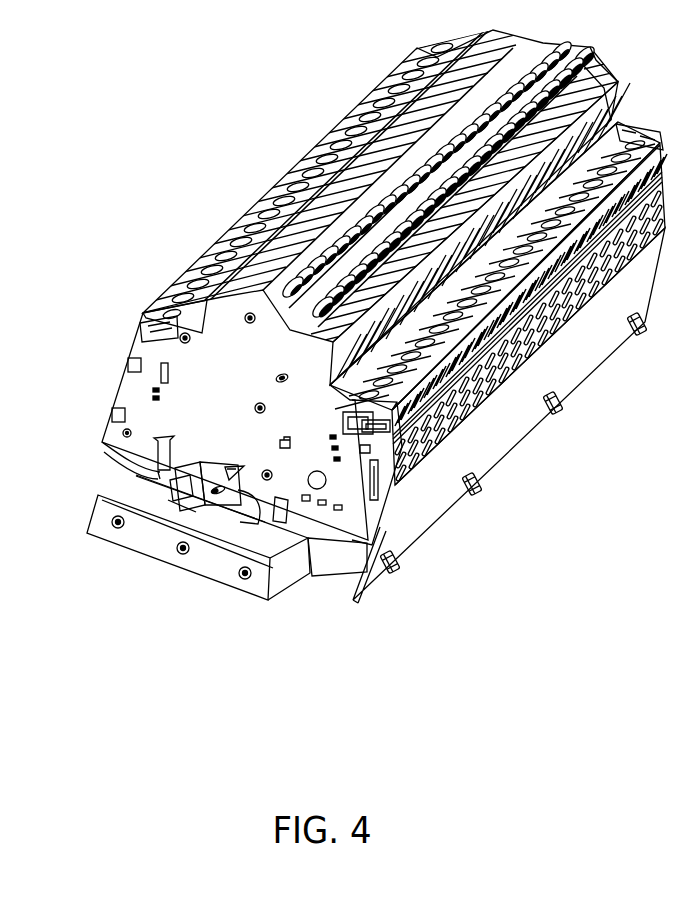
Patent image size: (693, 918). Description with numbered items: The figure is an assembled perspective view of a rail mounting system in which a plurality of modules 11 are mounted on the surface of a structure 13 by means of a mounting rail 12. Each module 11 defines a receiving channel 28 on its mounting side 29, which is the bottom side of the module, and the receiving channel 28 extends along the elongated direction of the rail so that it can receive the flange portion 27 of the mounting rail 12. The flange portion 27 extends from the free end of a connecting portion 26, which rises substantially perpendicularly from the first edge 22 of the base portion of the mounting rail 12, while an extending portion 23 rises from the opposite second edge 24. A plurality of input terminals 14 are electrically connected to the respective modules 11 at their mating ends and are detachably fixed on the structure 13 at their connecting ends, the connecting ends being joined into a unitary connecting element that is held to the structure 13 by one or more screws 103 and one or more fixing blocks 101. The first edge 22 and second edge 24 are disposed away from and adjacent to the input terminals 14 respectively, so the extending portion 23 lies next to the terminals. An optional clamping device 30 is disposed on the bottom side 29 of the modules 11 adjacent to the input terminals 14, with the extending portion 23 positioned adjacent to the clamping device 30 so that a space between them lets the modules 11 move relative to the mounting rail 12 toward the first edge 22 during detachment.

The module 11 is at (138, 400).
The mounting rail 12 is at (214, 506).
The structure 13 is at (130, 540).
The input terminal 14 is at (507, 423).
The first edge 22 is at (190, 503).
The extending portion 23 is at (243, 503).
The second edge 24 is at (215, 503).
The connecting portion 26 is at (175, 492).
The flange portion 27 is at (102, 442).
The receiving channel 28 is at (160, 474).
The mounting side 29 is at (183, 502).
The clamping device 30 is at (297, 522).
The fixing block 101 is at (335, 567).
The screw 103 is at (398, 562).